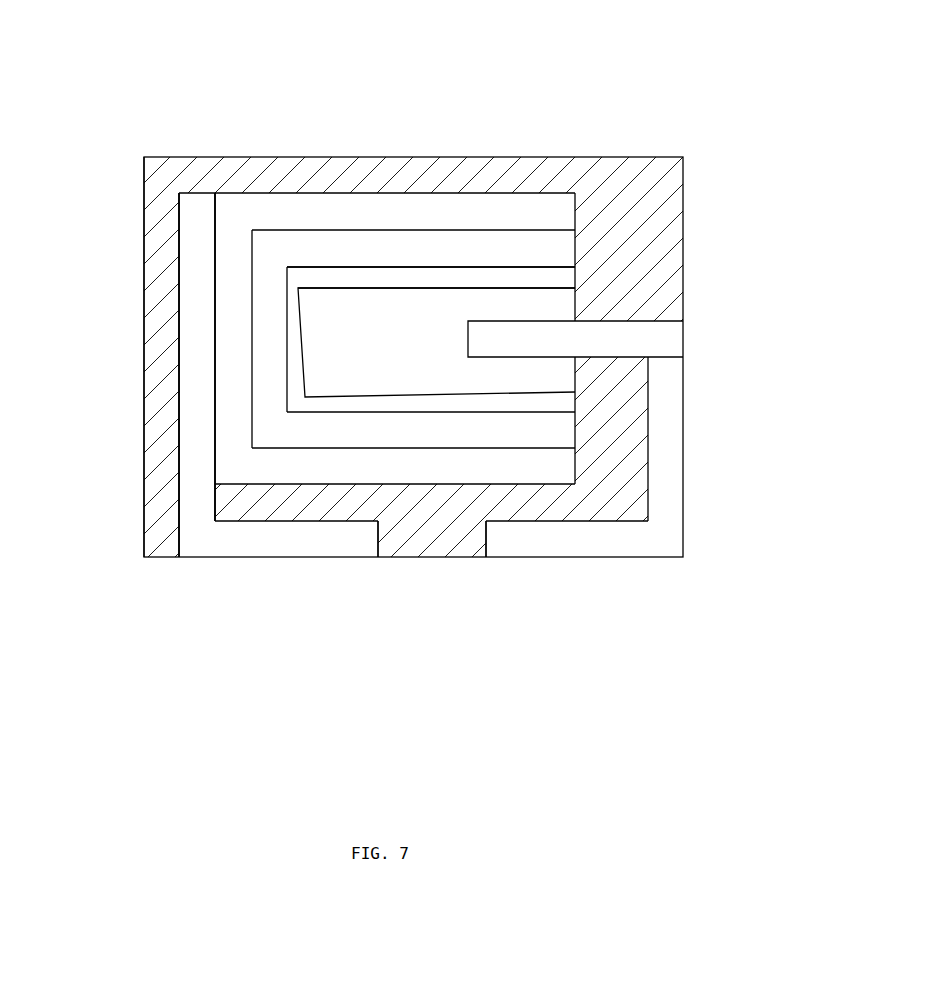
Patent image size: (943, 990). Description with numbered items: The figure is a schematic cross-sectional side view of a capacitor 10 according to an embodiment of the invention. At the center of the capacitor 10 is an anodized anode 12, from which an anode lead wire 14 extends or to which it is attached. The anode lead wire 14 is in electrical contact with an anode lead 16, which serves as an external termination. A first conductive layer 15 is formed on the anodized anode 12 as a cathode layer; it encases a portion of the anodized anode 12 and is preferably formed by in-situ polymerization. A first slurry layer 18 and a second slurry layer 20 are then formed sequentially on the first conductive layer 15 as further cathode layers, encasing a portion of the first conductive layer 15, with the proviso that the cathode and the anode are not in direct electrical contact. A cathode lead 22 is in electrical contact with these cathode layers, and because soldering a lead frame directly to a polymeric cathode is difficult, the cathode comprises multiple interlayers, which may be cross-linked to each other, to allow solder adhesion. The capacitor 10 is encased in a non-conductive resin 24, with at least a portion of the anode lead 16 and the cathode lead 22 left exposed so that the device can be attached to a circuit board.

The capacitor 10 is at (612, 118).
The anodized anode 12 is at (324, 300).
The anode lead wire 14 is at (655, 338).
The first conductive layer 15 is at (396, 280).
The anode lead 16 is at (578, 545).
The first slurry layer 18 is at (425, 245).
The second slurry layer 20 is at (237, 212).
The cathode lead 22 is at (203, 447).
The non-conductive resin 24 is at (165, 328).